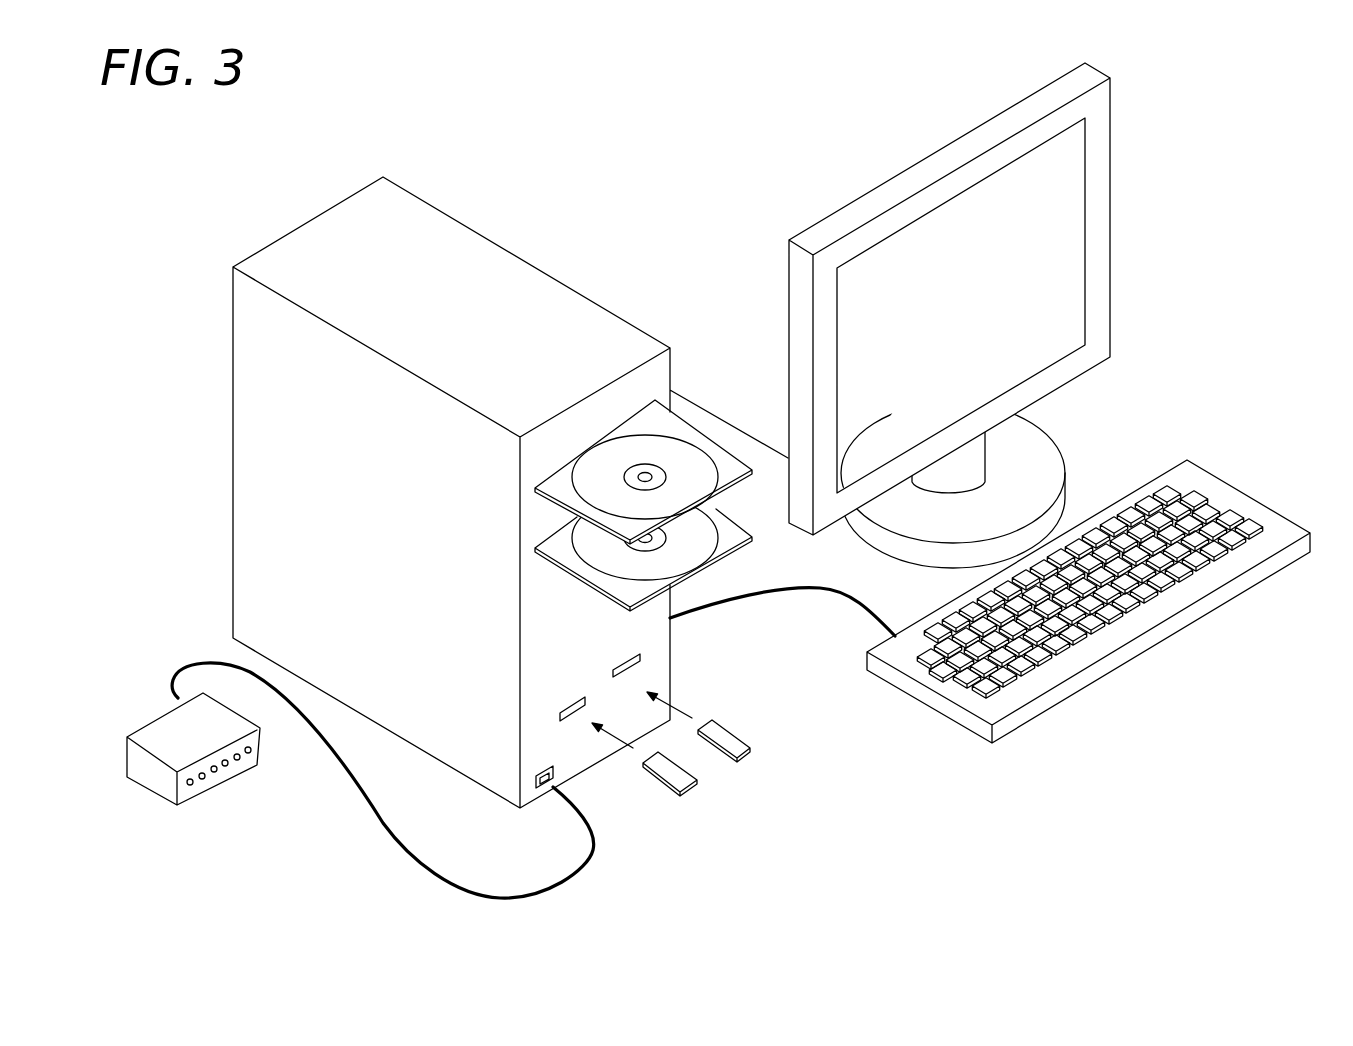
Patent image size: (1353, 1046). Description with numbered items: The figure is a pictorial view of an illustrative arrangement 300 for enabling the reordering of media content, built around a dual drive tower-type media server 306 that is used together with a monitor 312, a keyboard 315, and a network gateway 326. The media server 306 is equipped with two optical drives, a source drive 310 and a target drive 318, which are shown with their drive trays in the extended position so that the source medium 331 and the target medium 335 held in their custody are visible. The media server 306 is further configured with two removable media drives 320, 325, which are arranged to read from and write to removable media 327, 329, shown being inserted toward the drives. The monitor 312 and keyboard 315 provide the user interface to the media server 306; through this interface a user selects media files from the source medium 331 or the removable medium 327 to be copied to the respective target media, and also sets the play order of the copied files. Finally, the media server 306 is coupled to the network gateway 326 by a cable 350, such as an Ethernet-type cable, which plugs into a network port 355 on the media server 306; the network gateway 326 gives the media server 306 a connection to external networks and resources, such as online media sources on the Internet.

The arrangement 300 is at (556, 142).
The media server 306 is at (603, 305).
The source optical drive 310 is at (533, 470).
The monitor 312 is at (847, 205).
The keyboard 315 is at (938, 713).
The target optical drive 318 is at (533, 533).
The removable media drive 320 is at (560, 709).
The removable media drive 325 is at (643, 661).
The network gateway 326 is at (148, 793).
The removable medium 327 is at (652, 778).
The removable medium 329 is at (753, 732).
The source medium 331 is at (597, 437).
The target medium 335 is at (587, 578).
The cable 350 is at (385, 823).
The network port 355 is at (530, 806).